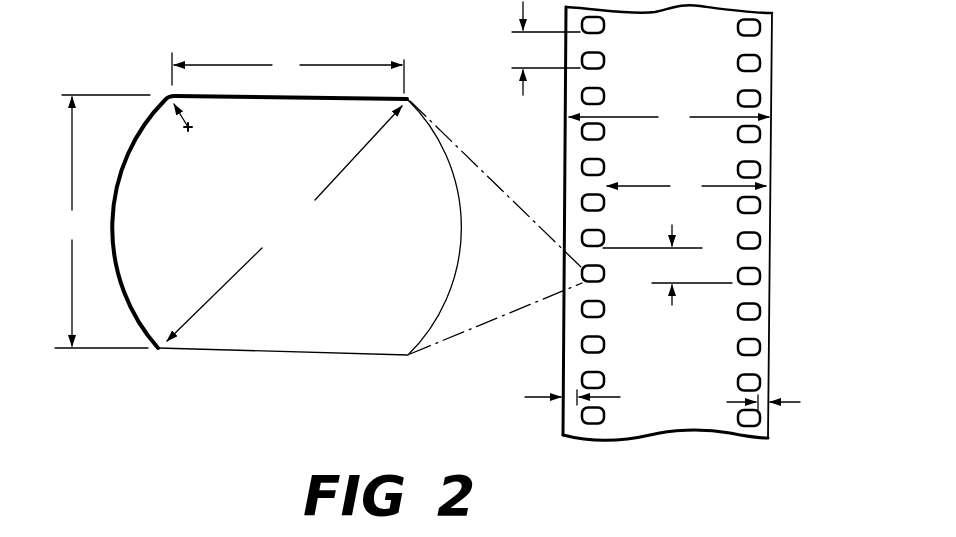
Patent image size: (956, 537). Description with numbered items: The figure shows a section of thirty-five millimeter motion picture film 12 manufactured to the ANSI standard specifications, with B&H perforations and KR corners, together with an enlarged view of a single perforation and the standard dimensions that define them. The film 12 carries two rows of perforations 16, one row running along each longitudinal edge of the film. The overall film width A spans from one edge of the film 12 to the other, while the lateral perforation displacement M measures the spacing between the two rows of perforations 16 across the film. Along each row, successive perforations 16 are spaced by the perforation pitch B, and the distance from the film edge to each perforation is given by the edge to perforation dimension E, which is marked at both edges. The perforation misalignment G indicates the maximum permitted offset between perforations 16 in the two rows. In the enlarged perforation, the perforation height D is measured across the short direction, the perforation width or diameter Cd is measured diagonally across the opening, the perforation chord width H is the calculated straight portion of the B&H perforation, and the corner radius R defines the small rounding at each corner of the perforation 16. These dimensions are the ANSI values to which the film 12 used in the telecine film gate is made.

The film 12 is at (772, 72).
The perforations 16 is at (760, 207).
The film width A is at (669, 118).
The perforation pitch (long) B is at (546, 48).
The perforation height D is at (102, 221).
The edge to perforation E is at (671, 402).
The perforation misalignment G is at (667, 280).
The perforation chord width H is at (288, 73).
The lateral perforation displacement M is at (686, 187).
The corner radius R is at (189, 127).
The perforation width (diameter) Cd is at (284, 223).